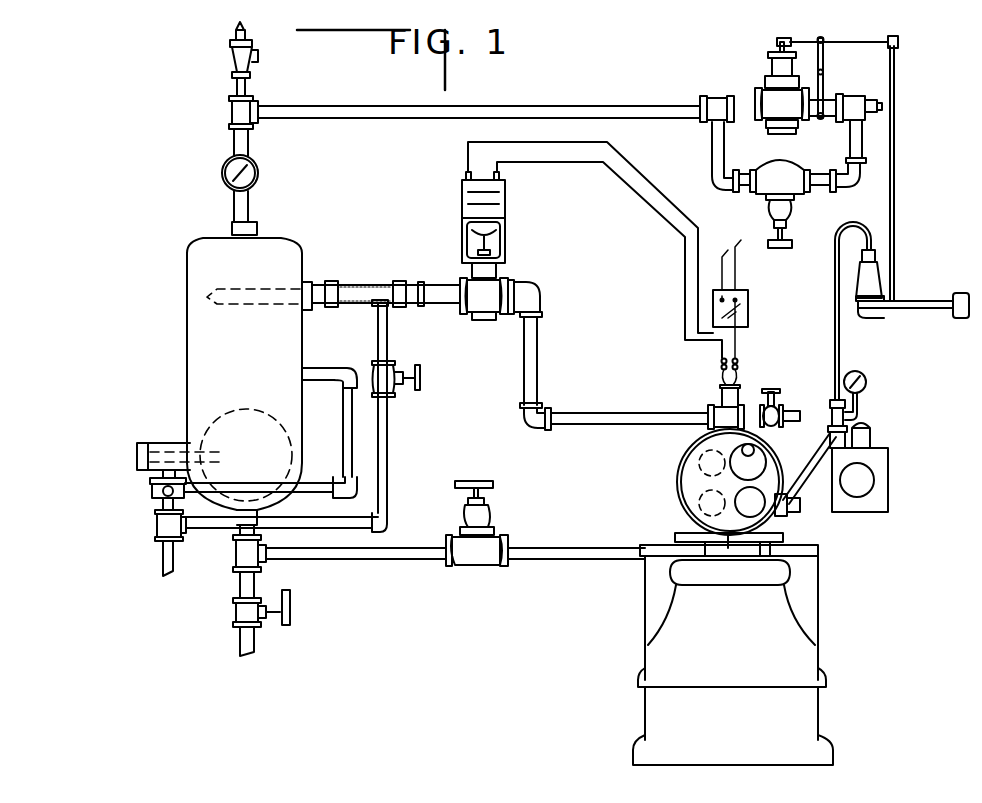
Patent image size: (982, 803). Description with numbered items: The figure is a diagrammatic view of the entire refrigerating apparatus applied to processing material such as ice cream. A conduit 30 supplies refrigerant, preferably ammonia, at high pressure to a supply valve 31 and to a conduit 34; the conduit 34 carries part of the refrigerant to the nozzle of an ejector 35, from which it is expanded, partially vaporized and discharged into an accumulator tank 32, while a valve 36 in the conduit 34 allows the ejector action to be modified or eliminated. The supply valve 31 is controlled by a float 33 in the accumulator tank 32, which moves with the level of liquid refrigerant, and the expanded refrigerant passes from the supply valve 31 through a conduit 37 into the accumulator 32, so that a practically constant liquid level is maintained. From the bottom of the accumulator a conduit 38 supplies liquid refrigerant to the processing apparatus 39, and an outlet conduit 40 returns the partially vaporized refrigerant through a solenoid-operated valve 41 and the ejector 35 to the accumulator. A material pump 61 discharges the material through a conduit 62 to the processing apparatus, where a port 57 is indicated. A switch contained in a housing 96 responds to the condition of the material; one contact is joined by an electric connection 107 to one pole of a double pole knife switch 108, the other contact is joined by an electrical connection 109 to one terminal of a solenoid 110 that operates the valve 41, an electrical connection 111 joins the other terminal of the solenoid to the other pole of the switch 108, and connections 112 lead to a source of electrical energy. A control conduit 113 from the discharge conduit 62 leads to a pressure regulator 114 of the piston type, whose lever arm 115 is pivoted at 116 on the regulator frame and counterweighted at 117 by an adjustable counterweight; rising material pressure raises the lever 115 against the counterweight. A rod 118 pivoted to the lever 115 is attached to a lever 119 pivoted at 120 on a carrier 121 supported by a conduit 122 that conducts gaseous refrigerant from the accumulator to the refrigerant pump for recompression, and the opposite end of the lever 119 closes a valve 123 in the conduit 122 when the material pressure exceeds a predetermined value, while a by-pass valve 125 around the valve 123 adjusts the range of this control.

The conduit 30 is at (165, 556).
The supply valve 31 is at (152, 493).
The accumulator tank 32 is at (186, 361).
The float 33 is at (256, 406).
The conduit 34 is at (387, 463).
The ejector 35 is at (362, 283).
The valve 36 is at (375, 375).
The conduit 37 is at (343, 426).
The conduit 38 is at (350, 561).
The processing apparatus 39 is at (678, 468).
The outlet conduit 40 is at (587, 412).
The solenoid-operated valve 41 is at (507, 276).
The port 57 is at (755, 450).
The pump 61 is at (889, 484).
The conduit 62 is at (818, 440).
The housing 96 is at (742, 396).
The electric connection 107 is at (739, 362).
The double pole knife switch 108 is at (748, 316).
The electrical connection 109 is at (699, 340).
The solenoid 110 is at (506, 198).
The electrical connection 111 is at (566, 143).
The connections 112 is at (740, 256).
The control conduit 113 is at (840, 358).
The pressure regulator 114 is at (878, 270).
The lever arm 115 is at (866, 318).
The pivot 116 is at (880, 312).
The counterweight 117 is at (961, 292).
The rod 118 is at (896, 198).
The lever 119 is at (872, 38).
The pivot 120 is at (824, 38).
The carrier 121 is at (825, 74).
The conduit 122 is at (555, 105).
The valve 123 is at (762, 92).
The by-pass valve 125 is at (790, 172).